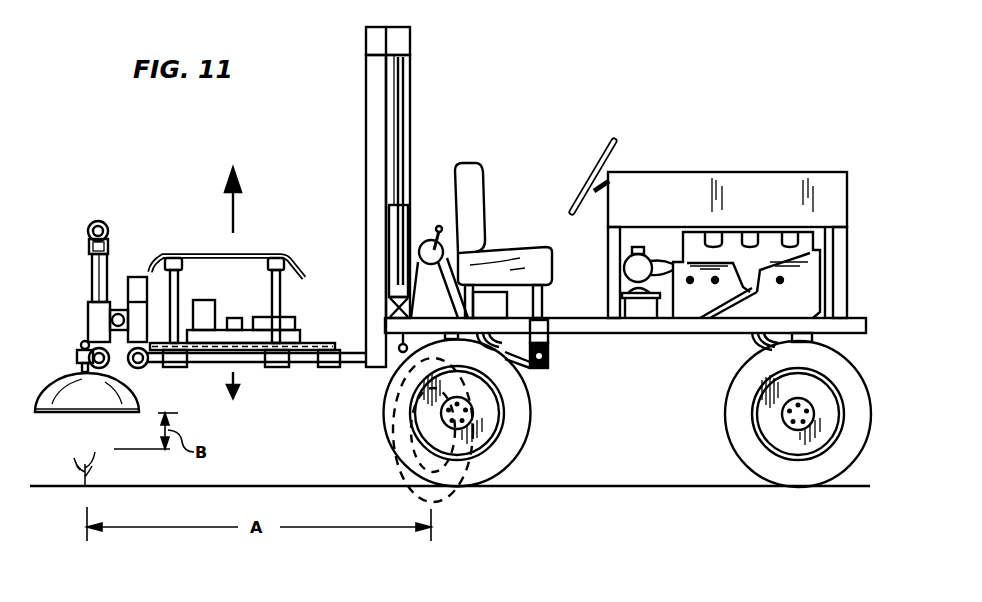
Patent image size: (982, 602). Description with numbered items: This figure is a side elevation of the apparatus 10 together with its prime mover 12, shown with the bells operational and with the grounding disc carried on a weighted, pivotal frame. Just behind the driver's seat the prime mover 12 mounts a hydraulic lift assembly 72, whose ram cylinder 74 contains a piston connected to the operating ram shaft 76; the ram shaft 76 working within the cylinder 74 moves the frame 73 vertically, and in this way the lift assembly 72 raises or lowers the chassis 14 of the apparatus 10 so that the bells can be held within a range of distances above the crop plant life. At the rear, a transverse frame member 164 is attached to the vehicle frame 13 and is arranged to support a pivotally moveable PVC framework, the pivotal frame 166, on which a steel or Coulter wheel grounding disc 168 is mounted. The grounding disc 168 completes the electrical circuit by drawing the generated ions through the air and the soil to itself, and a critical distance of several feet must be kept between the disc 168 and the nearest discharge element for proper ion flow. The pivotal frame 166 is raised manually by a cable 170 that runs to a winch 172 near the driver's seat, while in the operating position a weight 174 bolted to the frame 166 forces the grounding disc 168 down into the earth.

The apparatus 10 is at (176, 193).
The prime mover 12 is at (745, 142).
The vehicle frame 13 is at (665, 333).
The chassis 14 is at (260, 243).
The hydraulic lift assembly 72 is at (410, 95).
The frame 73 is at (366, 128).
The ram cylinder 74 is at (400, 228).
The operating ram shaft 76 is at (405, 138).
The transverse frame member 164 is at (548, 348).
The pivotal frame 166 is at (530, 368).
The grounding disc 168 is at (395, 470).
The cable 170 is at (400, 350).
The winch 172 is at (447, 249).
The weight 174 is at (451, 321).